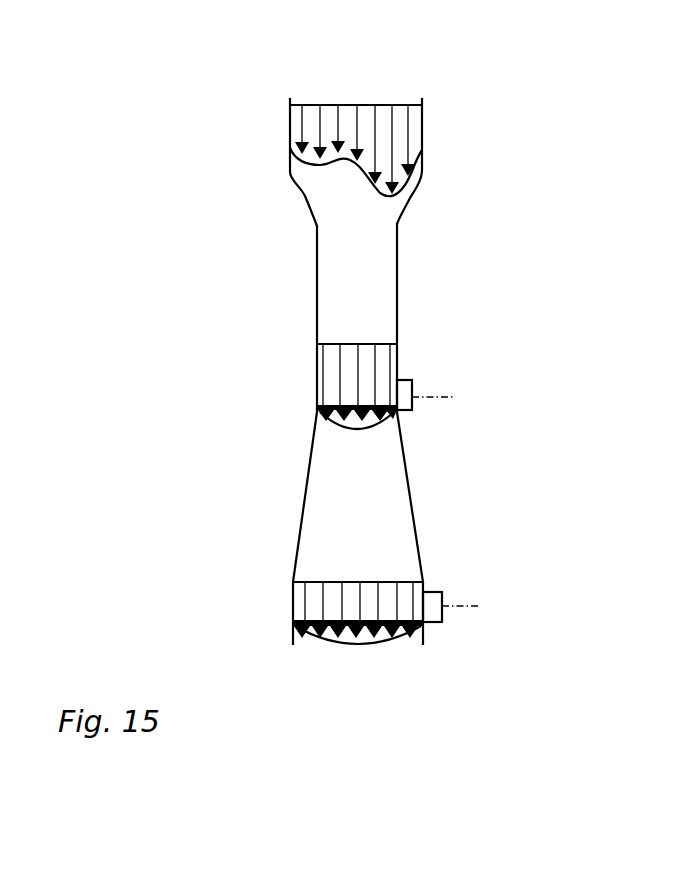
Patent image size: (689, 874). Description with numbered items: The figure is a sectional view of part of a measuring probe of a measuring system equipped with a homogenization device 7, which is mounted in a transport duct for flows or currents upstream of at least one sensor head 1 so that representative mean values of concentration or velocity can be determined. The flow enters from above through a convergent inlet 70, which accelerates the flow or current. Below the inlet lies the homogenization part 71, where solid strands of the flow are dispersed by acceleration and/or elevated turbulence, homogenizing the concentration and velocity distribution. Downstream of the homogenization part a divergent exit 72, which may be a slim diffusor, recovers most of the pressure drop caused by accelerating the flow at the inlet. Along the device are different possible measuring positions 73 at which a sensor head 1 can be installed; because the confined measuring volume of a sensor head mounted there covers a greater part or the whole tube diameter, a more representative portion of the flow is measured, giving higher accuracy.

The homogenization device 7 is at (368, 371).
The convergent inlet 70 is at (291, 176).
The homogenization part 71 is at (314, 268).
The divergent exit 72 is at (303, 497).
The measuring position 73 is at (412, 404).
The sensor head 1 is at (422, 360).